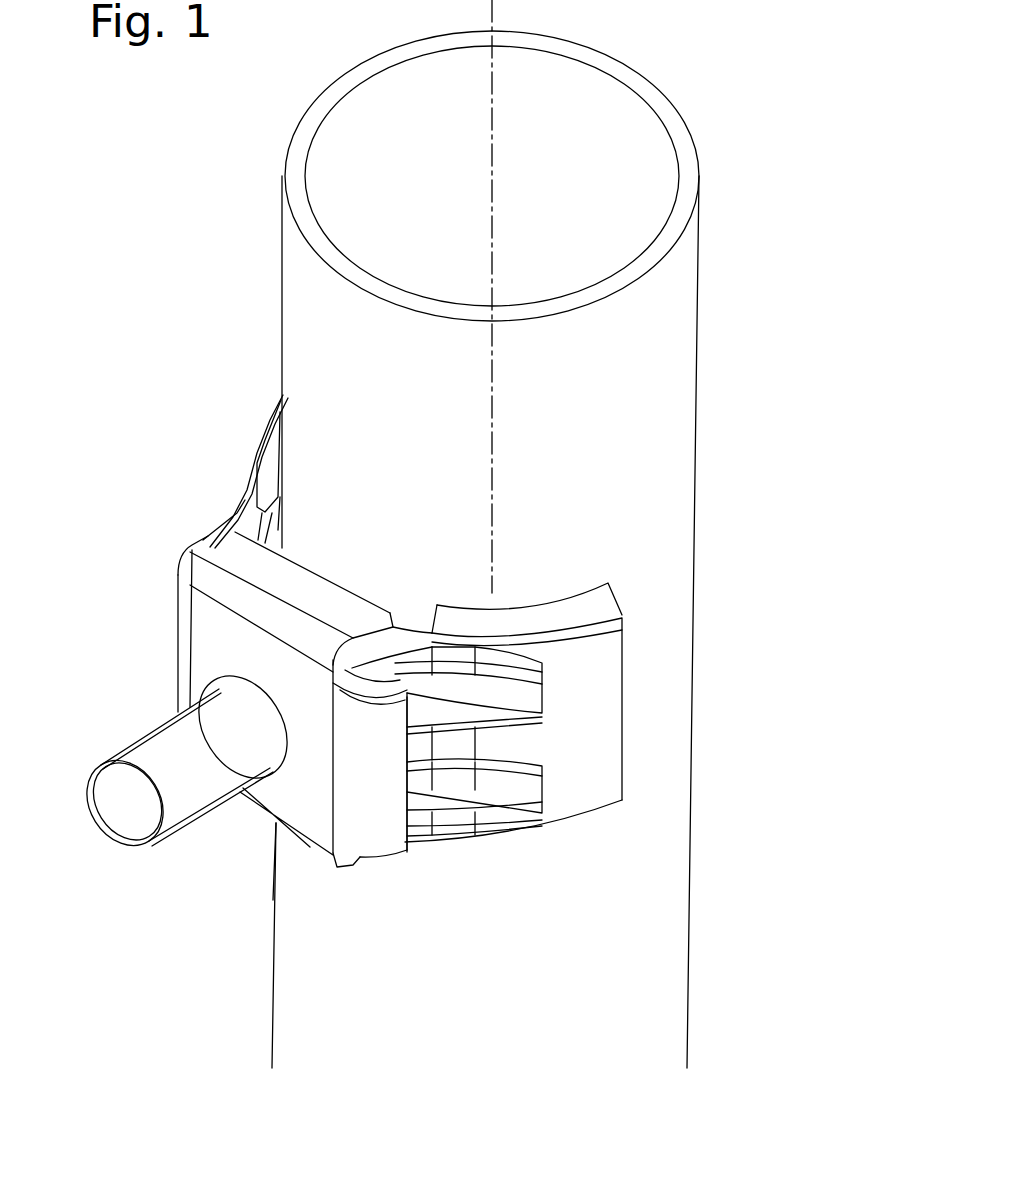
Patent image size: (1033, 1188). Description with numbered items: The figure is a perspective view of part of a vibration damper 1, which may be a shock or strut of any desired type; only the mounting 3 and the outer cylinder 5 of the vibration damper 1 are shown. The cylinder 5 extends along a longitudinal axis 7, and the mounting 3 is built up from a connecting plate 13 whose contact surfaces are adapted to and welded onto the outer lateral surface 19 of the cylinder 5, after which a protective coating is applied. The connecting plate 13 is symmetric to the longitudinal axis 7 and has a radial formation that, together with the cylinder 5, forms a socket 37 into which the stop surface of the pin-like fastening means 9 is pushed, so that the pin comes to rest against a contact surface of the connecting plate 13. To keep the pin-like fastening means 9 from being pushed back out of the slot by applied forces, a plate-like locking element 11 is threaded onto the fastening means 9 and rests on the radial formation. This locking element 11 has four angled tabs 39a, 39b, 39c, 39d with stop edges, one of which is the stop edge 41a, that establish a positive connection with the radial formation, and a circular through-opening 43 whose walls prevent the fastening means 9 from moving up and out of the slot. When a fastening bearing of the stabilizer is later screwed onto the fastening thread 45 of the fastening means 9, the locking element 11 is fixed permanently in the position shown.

The vibration damper 1 is at (712, 688).
The mounting 3 is at (159, 630).
The outer cylinder 5 is at (655, 348).
The longitudinal axis 7 is at (493, 147).
The pin-like fastening means 9 is at (195, 843).
The locking element 11 is at (320, 800).
The connecting plate 13 is at (549, 590).
The outer lateral surface 19 is at (694, 595).
The socket 37 is at (300, 537).
The angled tab 39a is at (238, 588).
The angled tab 39b is at (177, 672).
The angled tab 39c is at (348, 868).
The angled tab 39d is at (375, 808).
The stop edge 41a is at (395, 625).
The circular through-opening 43 is at (268, 800).
The fastening thread 45 is at (143, 735).